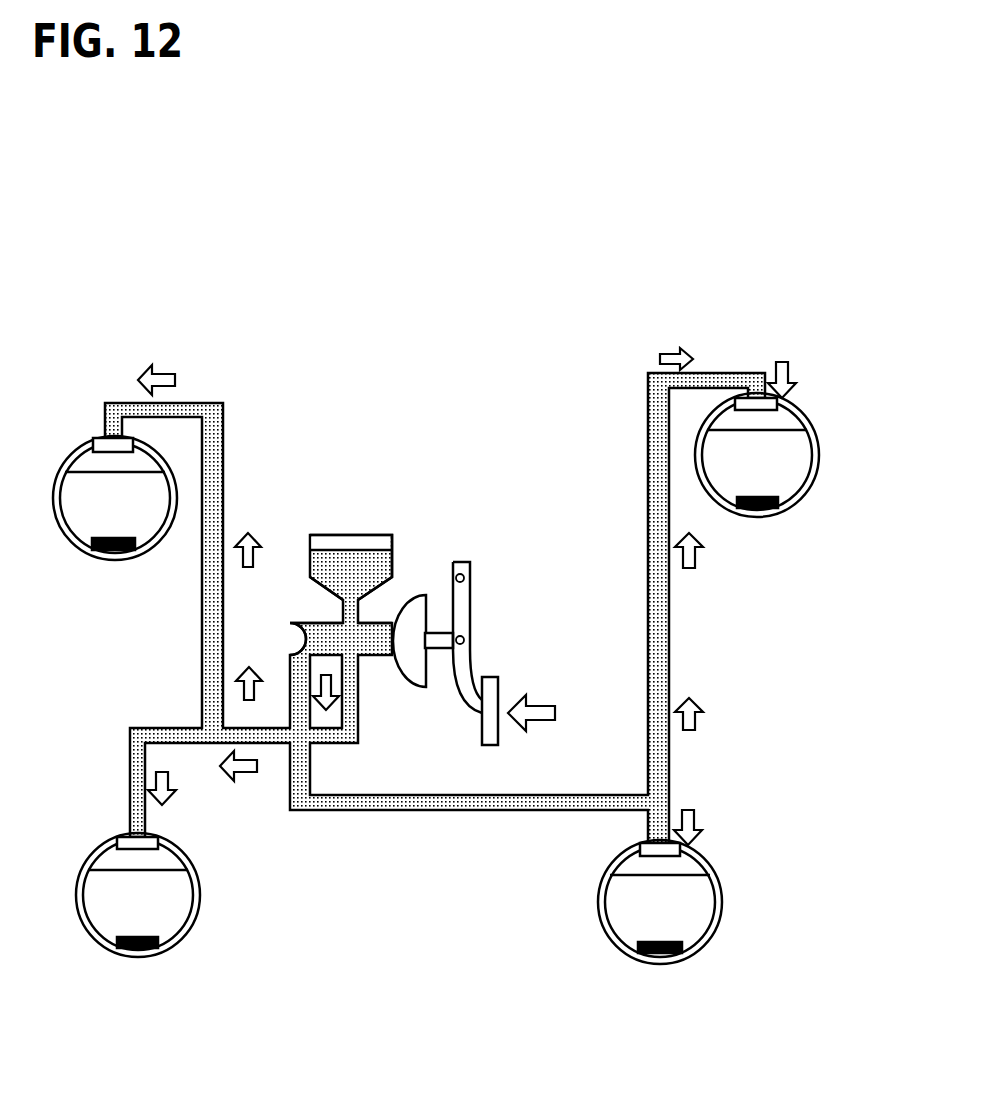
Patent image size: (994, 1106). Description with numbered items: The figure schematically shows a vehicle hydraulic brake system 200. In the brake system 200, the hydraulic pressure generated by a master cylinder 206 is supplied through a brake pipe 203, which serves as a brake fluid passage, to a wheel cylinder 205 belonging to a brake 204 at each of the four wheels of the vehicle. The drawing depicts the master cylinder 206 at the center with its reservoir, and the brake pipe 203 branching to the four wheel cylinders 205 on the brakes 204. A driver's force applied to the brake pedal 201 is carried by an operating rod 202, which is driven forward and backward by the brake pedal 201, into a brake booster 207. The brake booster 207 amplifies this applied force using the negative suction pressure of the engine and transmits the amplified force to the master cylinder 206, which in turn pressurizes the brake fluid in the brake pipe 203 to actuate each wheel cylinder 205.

The hydraulic brake system 200 is at (505, 370).
The brake pedal 201 is at (498, 698).
The operating rod 202 is at (442, 633).
The brake pipe 203 is at (202, 617).
The brake 204 is at (65, 537).
The wheel cylinder 205 is at (94, 444).
The master cylinder 206 is at (296, 628).
The brake booster 207 is at (412, 607).